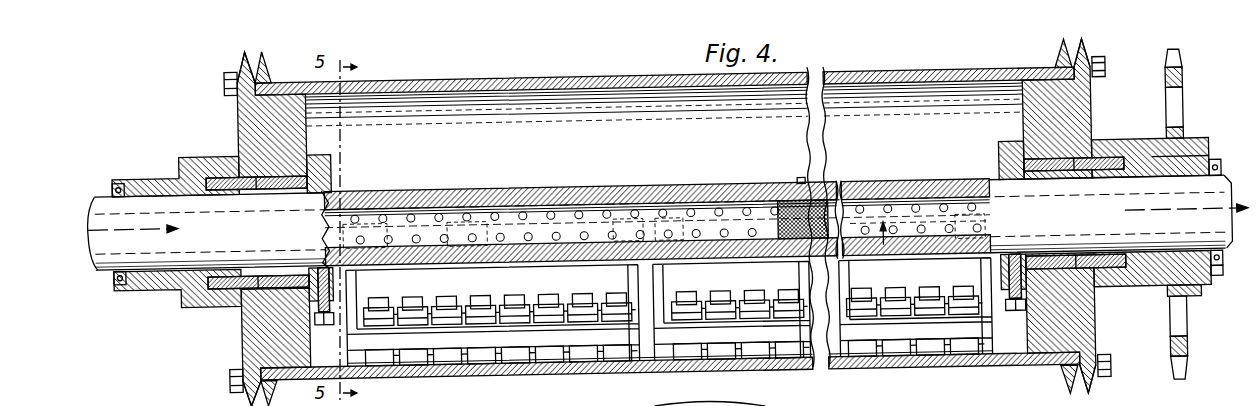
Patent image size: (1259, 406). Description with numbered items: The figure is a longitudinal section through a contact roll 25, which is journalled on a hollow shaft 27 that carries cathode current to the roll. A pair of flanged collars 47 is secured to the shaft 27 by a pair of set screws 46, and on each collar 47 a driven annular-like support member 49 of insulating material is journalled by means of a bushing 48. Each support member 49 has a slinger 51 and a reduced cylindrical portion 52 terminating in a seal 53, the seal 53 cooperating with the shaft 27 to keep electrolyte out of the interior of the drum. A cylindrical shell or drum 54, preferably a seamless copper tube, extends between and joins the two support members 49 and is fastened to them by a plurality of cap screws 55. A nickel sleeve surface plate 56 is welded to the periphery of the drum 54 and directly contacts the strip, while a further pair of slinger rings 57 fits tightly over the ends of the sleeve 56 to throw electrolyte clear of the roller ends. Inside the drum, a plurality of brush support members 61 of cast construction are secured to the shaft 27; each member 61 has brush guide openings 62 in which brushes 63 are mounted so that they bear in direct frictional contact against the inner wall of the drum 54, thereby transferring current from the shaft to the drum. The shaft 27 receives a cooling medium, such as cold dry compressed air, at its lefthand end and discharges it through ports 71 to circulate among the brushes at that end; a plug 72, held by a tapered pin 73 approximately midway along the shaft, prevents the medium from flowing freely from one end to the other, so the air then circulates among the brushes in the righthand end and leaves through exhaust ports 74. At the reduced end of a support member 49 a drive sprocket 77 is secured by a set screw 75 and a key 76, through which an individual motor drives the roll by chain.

The contact roll 25 is at (632, 70).
The shaft 27 is at (162, 268).
The set screws 46 is at (318, 323).
The flanged collars 47 is at (330, 178).
The bushing 48 is at (302, 182).
The driven annular-like support member 49 is at (244, 340).
The slinger 51 is at (246, 56).
The reduced cylindrical portion 52 is at (144, 180).
The seal 53 is at (115, 183).
The cylindrical shell or drum 54 is at (505, 100).
The cap screws 55 is at (1110, 70).
The nickel sleeve surface plate 56 is at (498, 70).
The slinger rings 57 is at (268, 57).
The brush support members 61 is at (655, 271).
The brush guide openings 62 is at (478, 310).
The brushes 63 is at (547, 297).
The ports 71 is at (446, 232).
The plug 72 is at (774, 250).
The tapered pin 73 is at (801, 180).
The exhaust ports 74 is at (920, 242).
The set screw 75 is at (1198, 290).
The key 76 is at (1220, 275).
The drive sprocket 77 is at (1188, 82).